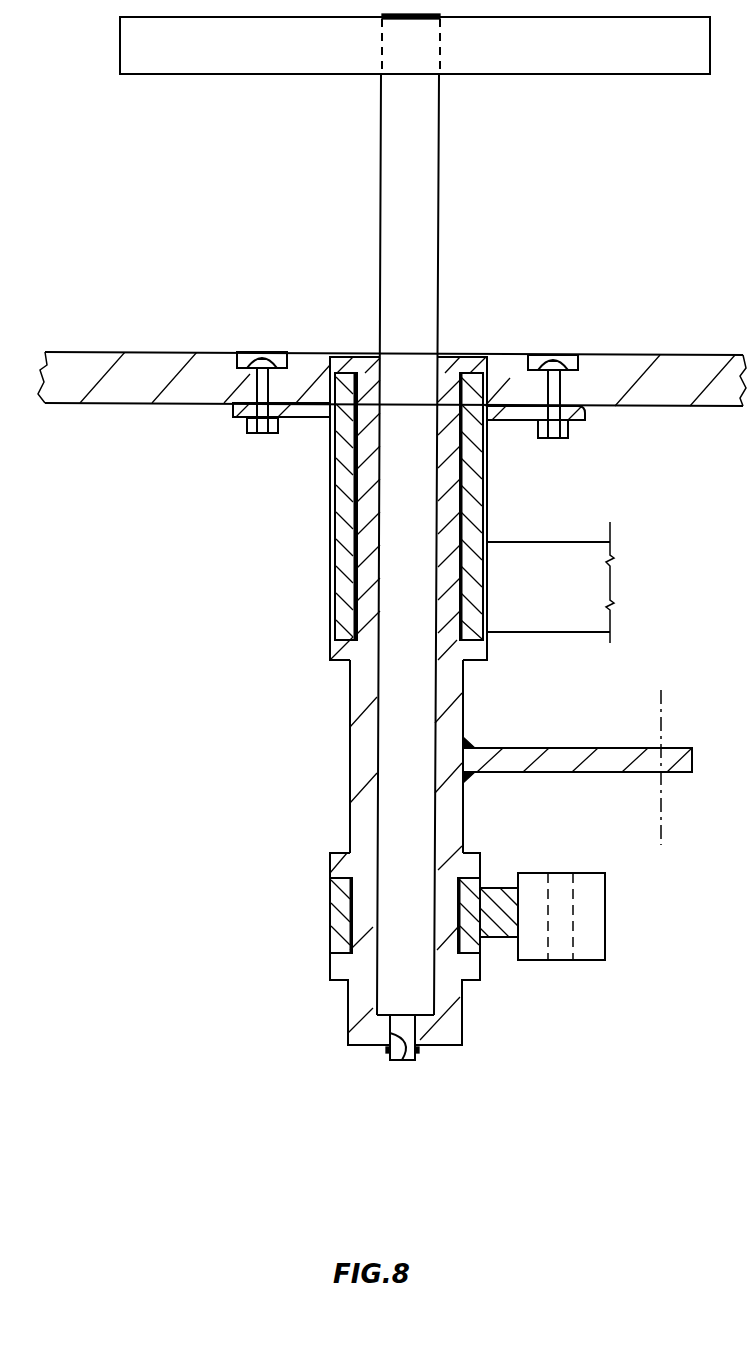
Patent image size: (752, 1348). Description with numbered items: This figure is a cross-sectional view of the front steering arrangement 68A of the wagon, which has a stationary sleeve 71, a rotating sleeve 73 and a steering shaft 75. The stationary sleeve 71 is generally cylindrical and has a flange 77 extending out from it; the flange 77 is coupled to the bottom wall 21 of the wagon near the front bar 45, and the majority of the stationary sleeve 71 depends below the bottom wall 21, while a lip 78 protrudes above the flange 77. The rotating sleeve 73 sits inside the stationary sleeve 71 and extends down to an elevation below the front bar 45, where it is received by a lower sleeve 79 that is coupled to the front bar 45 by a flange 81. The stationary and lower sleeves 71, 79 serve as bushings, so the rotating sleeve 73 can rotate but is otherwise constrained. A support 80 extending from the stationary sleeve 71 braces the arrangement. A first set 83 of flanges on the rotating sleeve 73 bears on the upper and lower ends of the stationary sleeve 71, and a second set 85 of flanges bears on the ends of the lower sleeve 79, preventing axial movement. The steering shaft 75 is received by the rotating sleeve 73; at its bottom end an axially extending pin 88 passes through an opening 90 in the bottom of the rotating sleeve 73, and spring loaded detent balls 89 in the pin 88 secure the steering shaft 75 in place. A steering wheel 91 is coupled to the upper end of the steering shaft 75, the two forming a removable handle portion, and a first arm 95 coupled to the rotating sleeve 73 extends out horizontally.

The steering wheel 91 is at (120, 40).
The front steering arrangement 68A is at (250, 248).
The bottom wall 21 is at (103, 360).
The first set of lower flanges 83 is at (452, 357).
The lip 78 is at (467, 397).
The flange 77 is at (295, 415).
The support 80 is at (562, 578).
The stationary sleeve 71 is at (330, 545).
The rotating sleeve 73 is at (357, 685).
The steering shaft 75 is at (362, 742).
The second set of upper and lower flanges 85 is at (342, 850).
The lower sleeve 79 is at (334, 888).
The flange 81 is at (488, 885).
The front bar 45 is at (606, 936).
The first arm 95 is at (613, 746).
The pin 88 is at (405, 1060).
The spring loaded detent balls 89 is at (419, 1052).
The opening 90 is at (400, 1060).